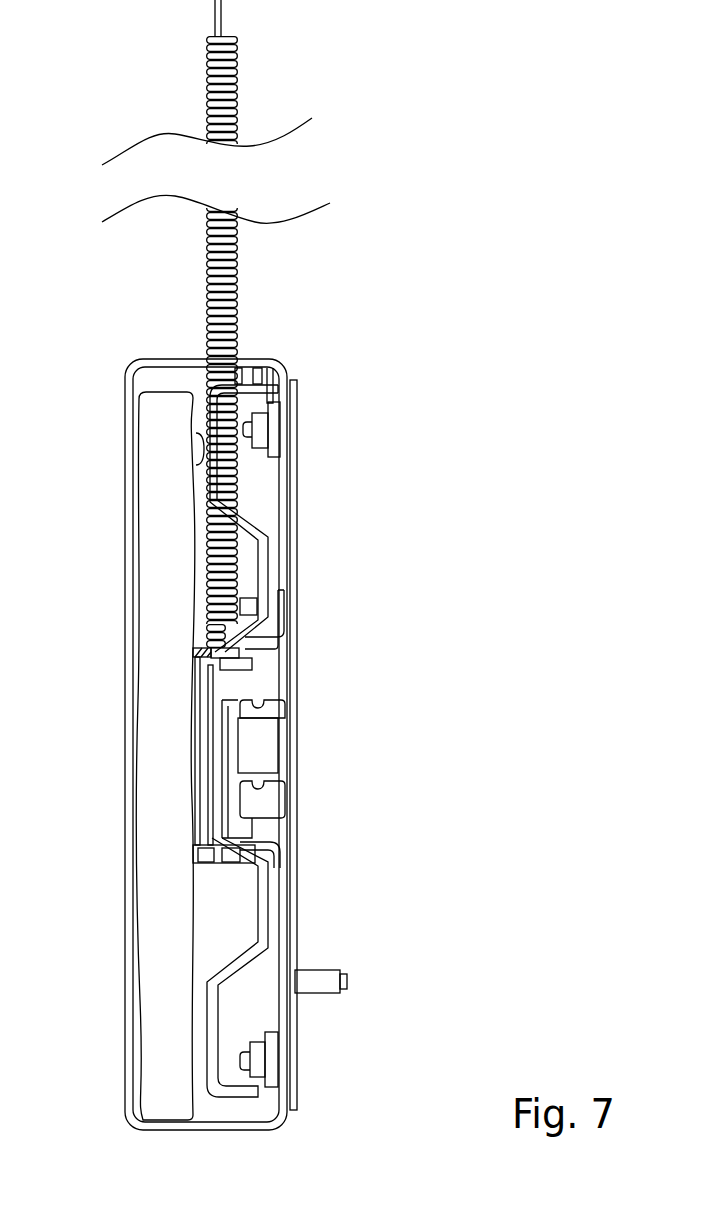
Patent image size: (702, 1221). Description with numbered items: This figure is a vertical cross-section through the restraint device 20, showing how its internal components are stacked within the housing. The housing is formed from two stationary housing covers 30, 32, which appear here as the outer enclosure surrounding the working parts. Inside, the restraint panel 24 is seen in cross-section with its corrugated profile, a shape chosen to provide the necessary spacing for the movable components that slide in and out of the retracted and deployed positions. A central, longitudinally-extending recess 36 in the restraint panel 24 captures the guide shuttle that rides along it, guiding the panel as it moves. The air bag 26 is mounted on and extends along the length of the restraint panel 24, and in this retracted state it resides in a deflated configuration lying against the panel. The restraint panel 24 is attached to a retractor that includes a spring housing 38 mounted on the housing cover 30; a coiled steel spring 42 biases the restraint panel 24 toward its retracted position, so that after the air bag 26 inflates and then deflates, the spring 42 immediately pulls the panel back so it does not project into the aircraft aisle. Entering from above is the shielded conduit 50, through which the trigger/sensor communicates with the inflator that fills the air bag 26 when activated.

The restraint device 20 is at (505, 575).
The restraint panel 24 is at (268, 552).
The air bag 26 is at (160, 472).
The housing cover 30 is at (293, 452).
The housing cover 32 is at (128, 735).
The recess 36 is at (212, 660).
The spring housing 38 is at (233, 803).
The spring 42 is at (270, 738).
The shielded conduit 50 is at (216, 70).